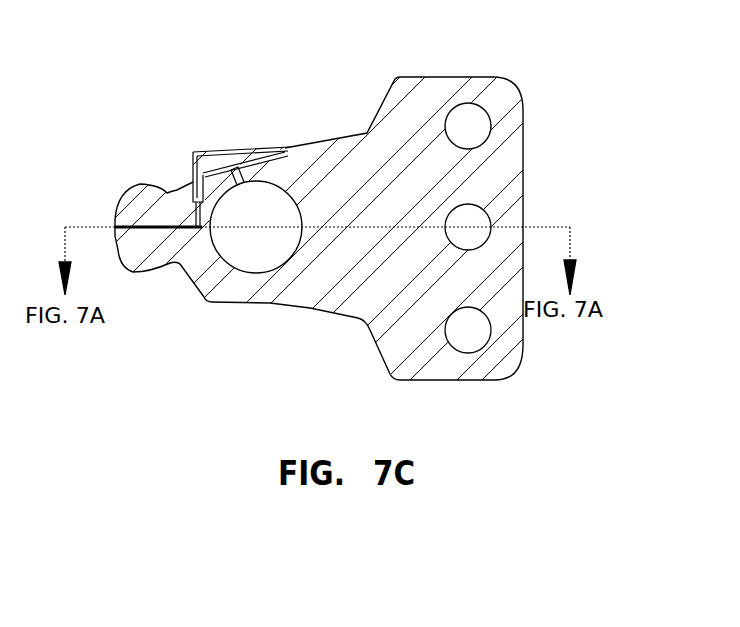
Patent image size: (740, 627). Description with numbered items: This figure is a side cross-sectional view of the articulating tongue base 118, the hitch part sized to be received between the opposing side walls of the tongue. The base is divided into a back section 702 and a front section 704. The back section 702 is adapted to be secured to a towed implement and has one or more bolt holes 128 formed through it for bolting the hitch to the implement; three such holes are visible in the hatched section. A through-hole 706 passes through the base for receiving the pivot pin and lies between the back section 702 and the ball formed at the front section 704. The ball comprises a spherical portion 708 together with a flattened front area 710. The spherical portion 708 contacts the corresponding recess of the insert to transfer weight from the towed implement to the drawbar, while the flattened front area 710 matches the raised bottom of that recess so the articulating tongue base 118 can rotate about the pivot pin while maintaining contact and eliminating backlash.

The back section 702 is at (504, 56).
The front section 704 is at (103, 81).
The through-hole 706 is at (268, 221).
The spherical portion 708 is at (143, 183).
The flattened front area 710 is at (115, 220).
The articulating tongue base 118 is at (287, 102).
The bolt holes 128 is at (472, 117).